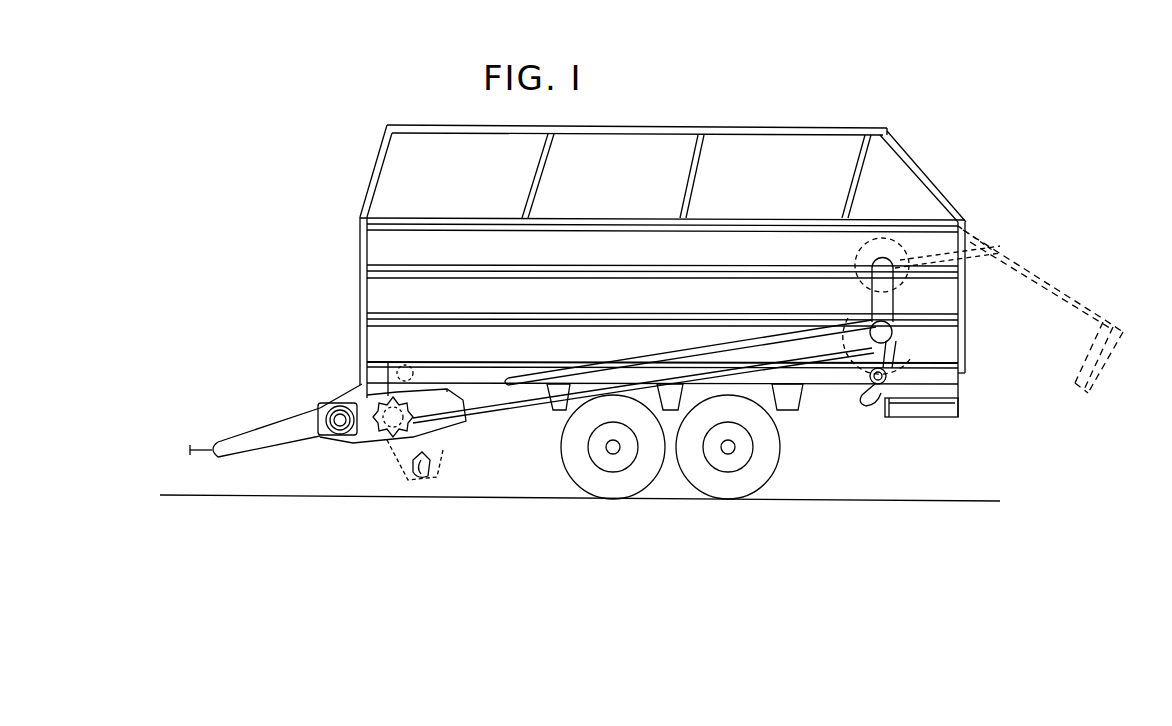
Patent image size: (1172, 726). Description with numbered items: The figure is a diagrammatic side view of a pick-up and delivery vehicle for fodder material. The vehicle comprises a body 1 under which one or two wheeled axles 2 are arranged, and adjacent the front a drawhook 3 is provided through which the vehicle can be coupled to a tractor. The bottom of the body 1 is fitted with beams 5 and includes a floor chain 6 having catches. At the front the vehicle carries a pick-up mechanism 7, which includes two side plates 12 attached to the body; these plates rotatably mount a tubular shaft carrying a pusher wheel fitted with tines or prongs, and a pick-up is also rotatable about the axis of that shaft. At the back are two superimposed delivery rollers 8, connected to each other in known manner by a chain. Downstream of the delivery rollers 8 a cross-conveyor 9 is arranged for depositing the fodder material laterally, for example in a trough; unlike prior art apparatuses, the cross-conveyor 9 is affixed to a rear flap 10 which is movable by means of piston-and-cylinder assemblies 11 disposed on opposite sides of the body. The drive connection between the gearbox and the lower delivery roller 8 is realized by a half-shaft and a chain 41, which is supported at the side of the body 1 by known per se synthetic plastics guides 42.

The body 1 is at (378, 247).
The wheeled axles 2 is at (723, 452).
The drawhook 3 is at (253, 437).
The beams 5 is at (788, 408).
The floor chain 6 is at (822, 392).
The pick-up mechanism 7 is at (370, 457).
The delivery rollers 8 is at (858, 257).
The cross-conveyor 9 is at (915, 418).
The rear flap 10 is at (1068, 248).
The piston-and-cylinder assemblies 11 is at (968, 234).
The side plates 12 is at (334, 440).
The chain 41 is at (807, 335).
The synthetic plastics guides 42 is at (737, 347).